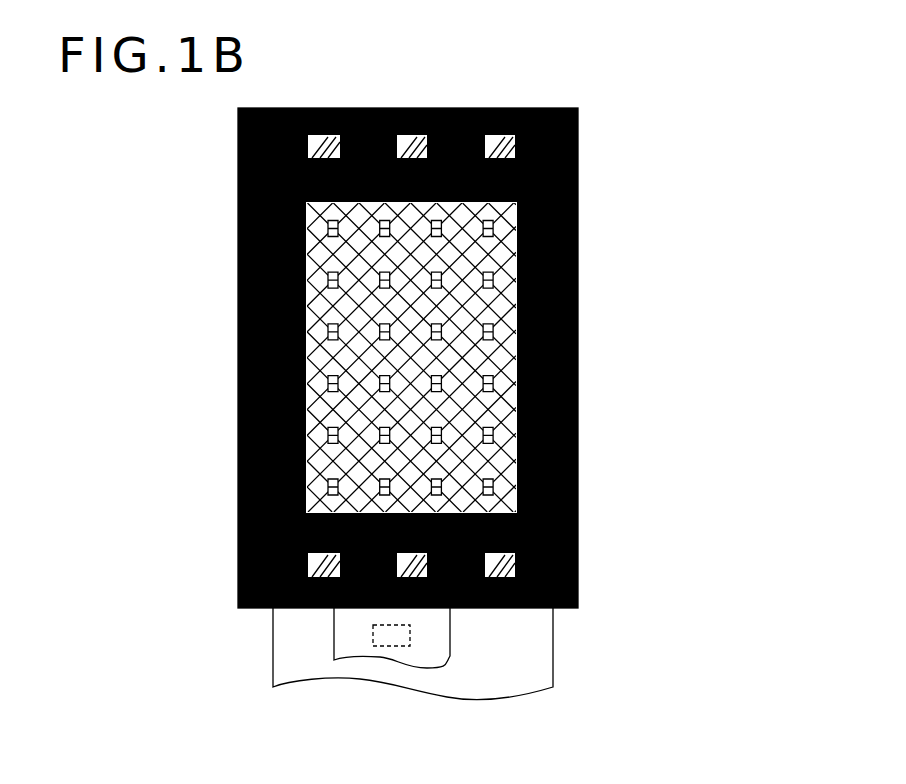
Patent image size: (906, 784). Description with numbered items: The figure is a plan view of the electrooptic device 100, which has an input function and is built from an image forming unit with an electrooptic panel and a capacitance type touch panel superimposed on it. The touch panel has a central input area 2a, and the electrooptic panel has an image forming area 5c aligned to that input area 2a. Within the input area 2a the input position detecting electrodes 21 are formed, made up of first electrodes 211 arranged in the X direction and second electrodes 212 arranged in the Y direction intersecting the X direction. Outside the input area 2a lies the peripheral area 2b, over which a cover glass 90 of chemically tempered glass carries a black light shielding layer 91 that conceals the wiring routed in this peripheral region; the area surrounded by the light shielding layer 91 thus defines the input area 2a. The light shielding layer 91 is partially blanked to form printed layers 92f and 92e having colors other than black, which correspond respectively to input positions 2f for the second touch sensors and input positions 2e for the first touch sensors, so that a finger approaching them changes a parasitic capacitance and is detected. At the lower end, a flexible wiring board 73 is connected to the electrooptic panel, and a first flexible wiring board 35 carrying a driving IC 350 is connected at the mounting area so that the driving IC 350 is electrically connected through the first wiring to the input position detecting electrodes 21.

The electrooptic device 100 is at (607, 172).
The peripheral area 2b is at (462, 358).
The light shielding layer 91 is at (583, 281).
The cover glass 90 is at (462, 358).
The input positions 2f is at (428, 105).
The printed layers 92f is at (500, 136).
The input positions 2e is at (396, 616).
The printed layers 92e is at (500, 577).
The input position detecting electrodes 21 is at (408, 357).
The first electrodes 211 is at (513, 371).
The second electrodes 212 is at (330, 405).
The input area 2a is at (410, 358).
The image forming area 5c is at (508, 281).
The flexible wiring board 73 is at (553, 664).
The first flexible wiring board 35 is at (450, 656).
The driving IC 350 is at (410, 628).